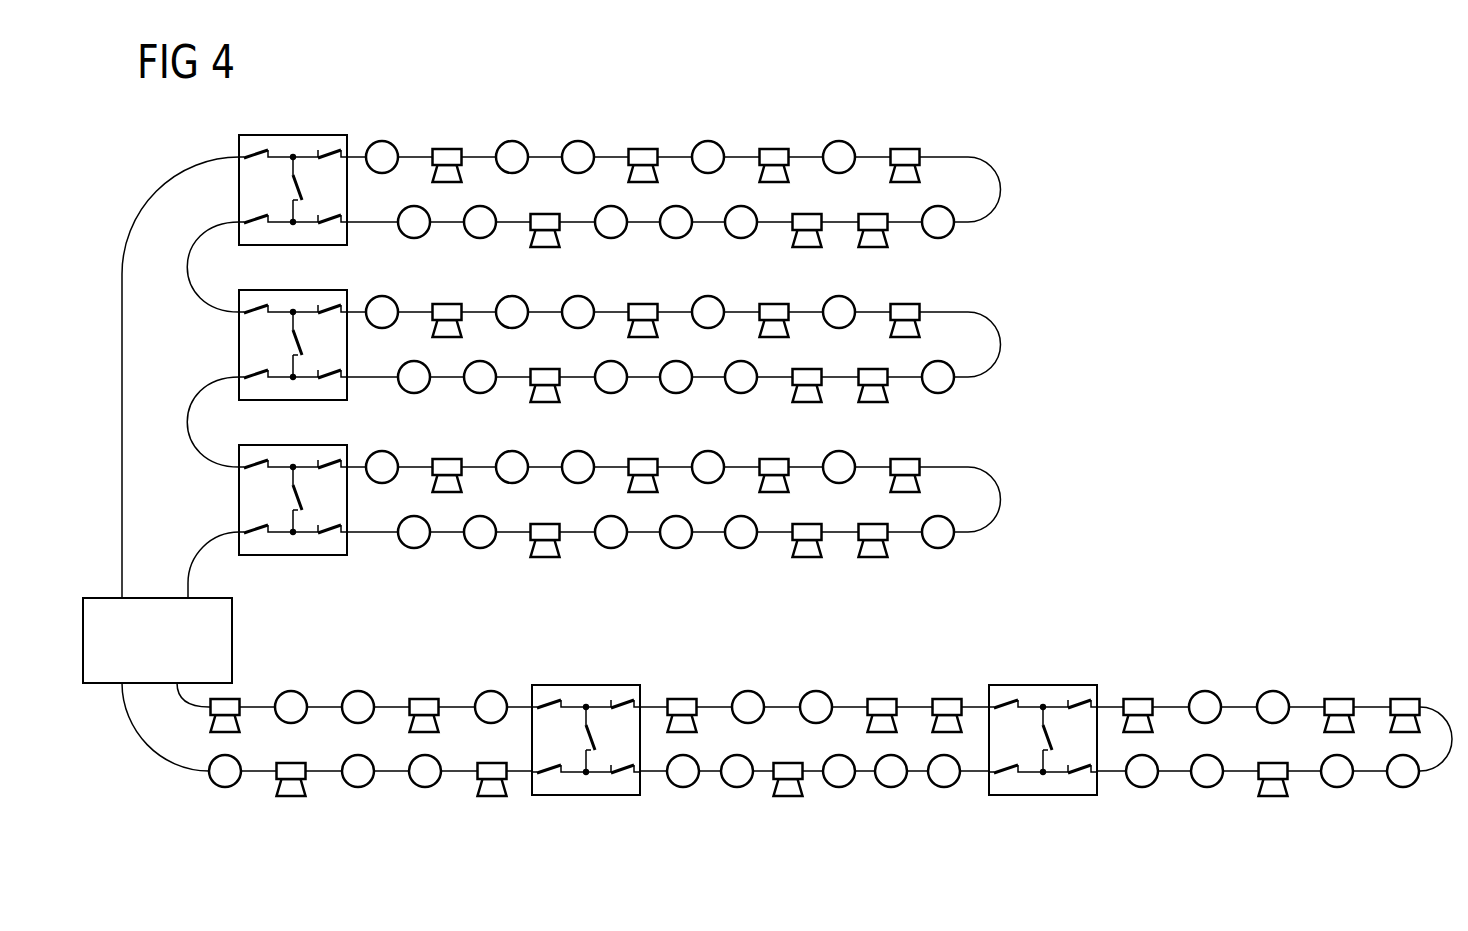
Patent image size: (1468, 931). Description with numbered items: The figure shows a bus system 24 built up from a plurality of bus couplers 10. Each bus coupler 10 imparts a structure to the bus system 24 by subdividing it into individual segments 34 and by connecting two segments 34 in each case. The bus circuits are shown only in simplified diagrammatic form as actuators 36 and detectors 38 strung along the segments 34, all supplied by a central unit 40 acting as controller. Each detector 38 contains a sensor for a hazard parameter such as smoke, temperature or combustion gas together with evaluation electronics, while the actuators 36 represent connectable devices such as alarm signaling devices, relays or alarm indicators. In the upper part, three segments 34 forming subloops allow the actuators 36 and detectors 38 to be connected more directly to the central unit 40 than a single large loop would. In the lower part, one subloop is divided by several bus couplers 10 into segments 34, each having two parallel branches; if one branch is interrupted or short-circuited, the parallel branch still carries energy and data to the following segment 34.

The bus coupler 10 is at (1136, 657).
The bus system 24 is at (871, 85).
The segment 34 is at (1004, 162).
The actuator 36 is at (460, 150).
The detector 38 is at (590, 147).
The central unit 40 is at (102, 683).